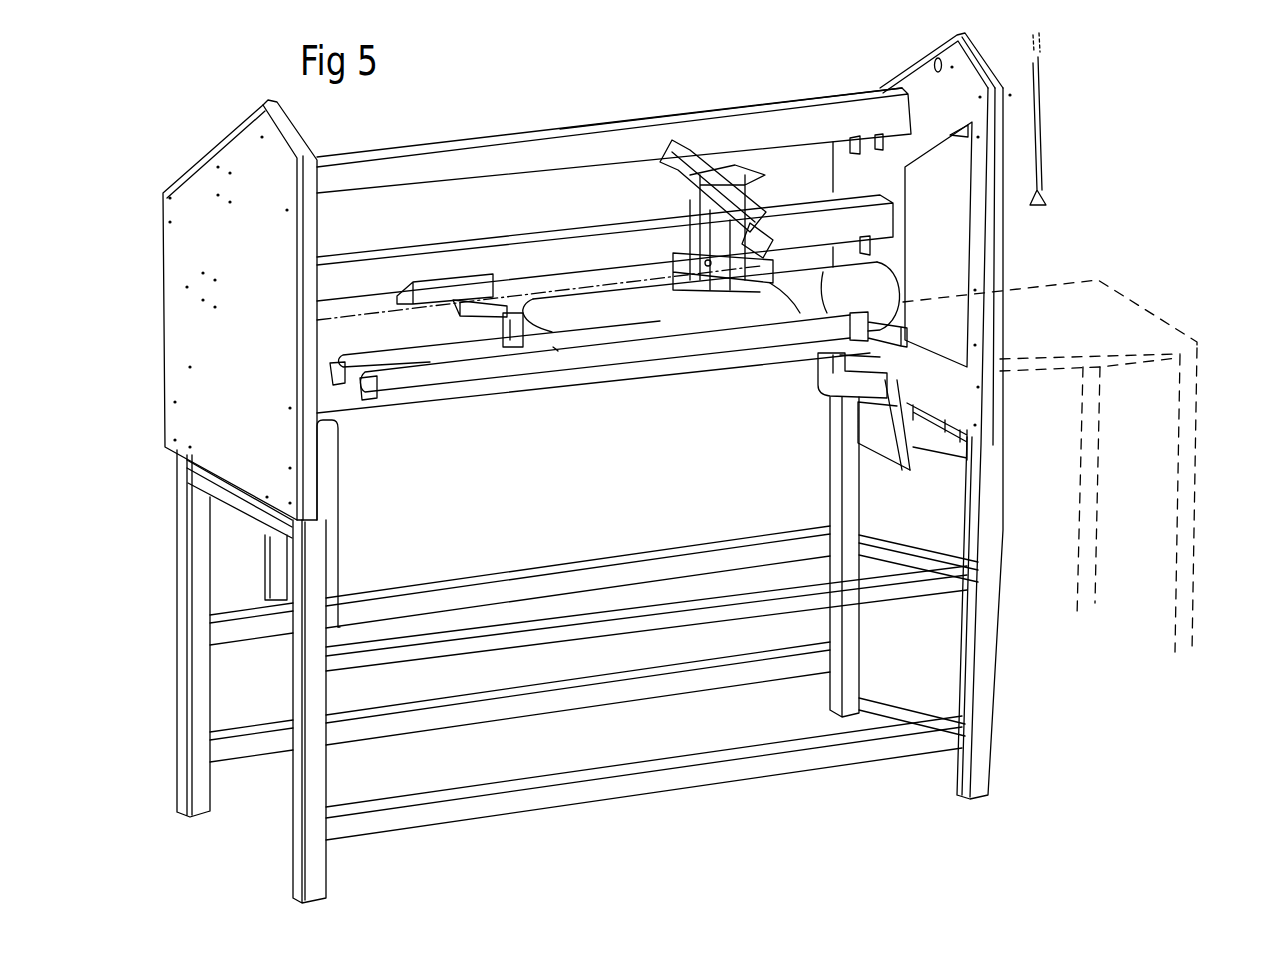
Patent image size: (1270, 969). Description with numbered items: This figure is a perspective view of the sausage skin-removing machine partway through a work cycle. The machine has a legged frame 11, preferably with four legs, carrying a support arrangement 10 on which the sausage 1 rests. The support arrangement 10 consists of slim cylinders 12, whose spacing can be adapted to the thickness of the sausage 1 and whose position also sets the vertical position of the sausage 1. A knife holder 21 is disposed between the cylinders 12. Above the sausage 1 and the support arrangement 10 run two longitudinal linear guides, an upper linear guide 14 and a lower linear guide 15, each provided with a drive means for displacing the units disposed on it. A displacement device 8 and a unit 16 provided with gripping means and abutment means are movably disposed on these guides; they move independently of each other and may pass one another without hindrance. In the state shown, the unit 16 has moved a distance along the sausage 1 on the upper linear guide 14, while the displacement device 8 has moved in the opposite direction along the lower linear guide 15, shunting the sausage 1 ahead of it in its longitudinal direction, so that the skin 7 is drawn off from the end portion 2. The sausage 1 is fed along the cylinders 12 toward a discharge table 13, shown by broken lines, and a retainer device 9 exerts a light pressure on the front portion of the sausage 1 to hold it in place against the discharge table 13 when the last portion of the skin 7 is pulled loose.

The sausage 1 is at (632, 307).
The end portion 2 is at (900, 282).
The skin 7 is at (772, 288).
The displacement device 8 is at (495, 322).
The retainer device 9 is at (1042, 150).
The support arrangement 10 is at (476, 441).
The legged frame 11 is at (982, 694).
The cylinders 12 is at (624, 353).
The discharge table 13 is at (1130, 320).
The upper linear guide 14 is at (383, 163).
The lower linear guide 15 is at (404, 270).
The unit provided with gripping means and abutment means 16 is at (686, 101).
The knife holder 21 is at (823, 397).